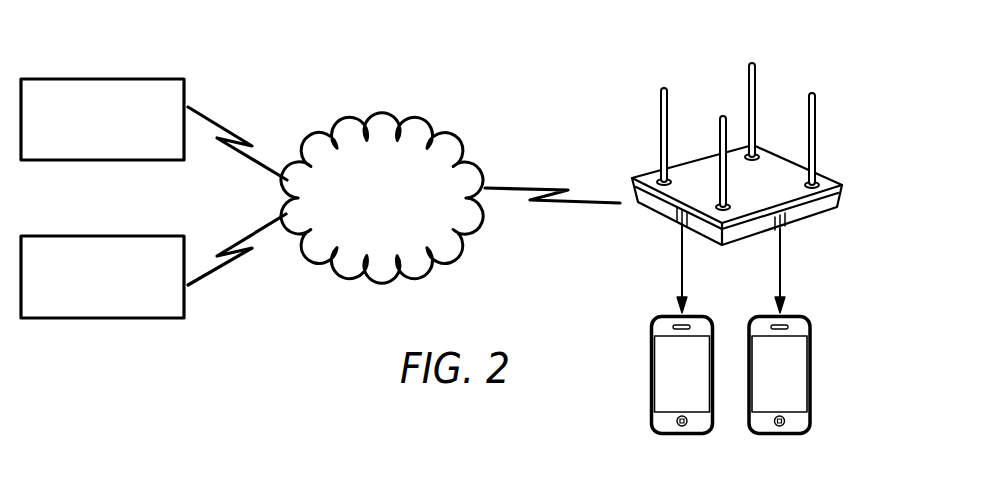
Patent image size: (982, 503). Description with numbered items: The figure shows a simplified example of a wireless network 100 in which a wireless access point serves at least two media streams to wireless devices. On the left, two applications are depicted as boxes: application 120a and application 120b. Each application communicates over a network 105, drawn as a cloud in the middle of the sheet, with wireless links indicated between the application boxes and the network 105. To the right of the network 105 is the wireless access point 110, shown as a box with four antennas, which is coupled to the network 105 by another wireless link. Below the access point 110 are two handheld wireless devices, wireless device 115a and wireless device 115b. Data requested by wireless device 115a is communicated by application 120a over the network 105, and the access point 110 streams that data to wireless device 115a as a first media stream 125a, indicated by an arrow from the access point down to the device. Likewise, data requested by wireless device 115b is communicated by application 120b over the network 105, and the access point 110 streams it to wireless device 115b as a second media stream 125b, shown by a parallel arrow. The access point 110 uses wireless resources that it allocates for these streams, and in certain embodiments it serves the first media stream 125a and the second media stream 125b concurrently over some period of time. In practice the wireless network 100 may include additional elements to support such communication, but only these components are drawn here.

The wireless network 100 is at (102, 13).
The network 105 is at (399, 220).
The wireless access point 110 is at (655, 213).
The wireless device 115a is at (683, 436).
The wireless device 115b is at (781, 436).
The application 120a is at (102, 119).
The application 120b is at (102, 277).
The first media stream 125a is at (680, 272).
The second media stream 125b is at (782, 272).